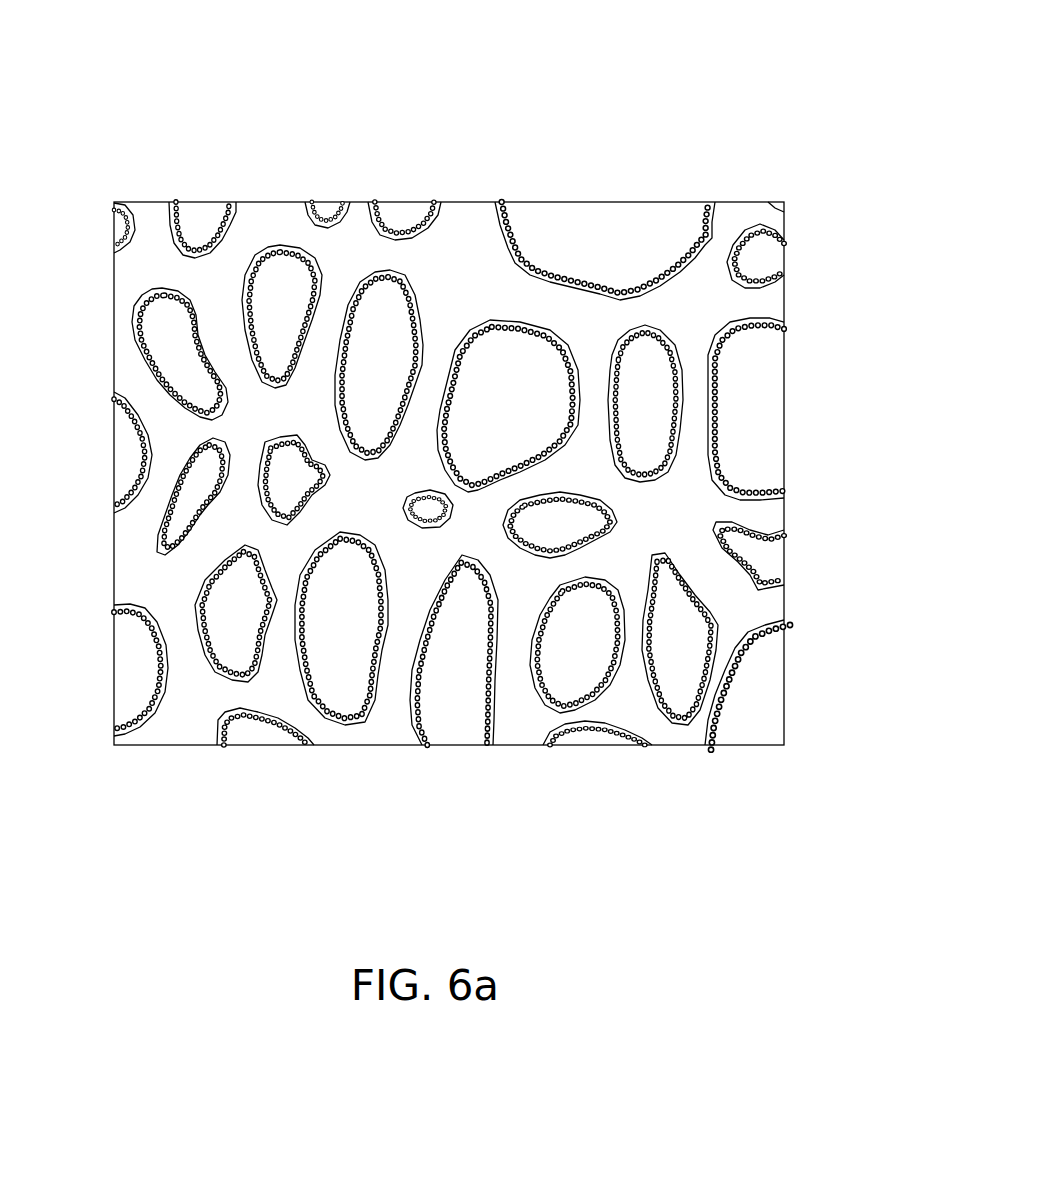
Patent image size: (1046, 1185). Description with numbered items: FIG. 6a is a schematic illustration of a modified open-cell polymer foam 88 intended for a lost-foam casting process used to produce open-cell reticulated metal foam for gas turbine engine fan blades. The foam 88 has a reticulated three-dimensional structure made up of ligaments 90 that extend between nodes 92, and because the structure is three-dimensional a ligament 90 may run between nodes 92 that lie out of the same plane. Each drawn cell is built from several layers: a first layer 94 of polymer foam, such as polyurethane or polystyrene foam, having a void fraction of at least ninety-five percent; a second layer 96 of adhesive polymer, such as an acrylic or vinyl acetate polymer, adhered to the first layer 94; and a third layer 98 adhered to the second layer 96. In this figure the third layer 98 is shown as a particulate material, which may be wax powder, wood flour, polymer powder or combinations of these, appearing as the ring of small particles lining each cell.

The foam 88 is at (600, 93).
The ligament 90 is at (228, 338).
The node 92 is at (207, 281).
The first layer 94 is at (470, 222).
The second layer 96 is at (233, 205).
The third layer 98 is at (320, 205).